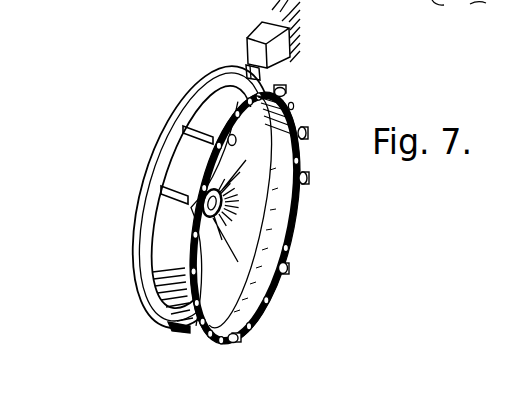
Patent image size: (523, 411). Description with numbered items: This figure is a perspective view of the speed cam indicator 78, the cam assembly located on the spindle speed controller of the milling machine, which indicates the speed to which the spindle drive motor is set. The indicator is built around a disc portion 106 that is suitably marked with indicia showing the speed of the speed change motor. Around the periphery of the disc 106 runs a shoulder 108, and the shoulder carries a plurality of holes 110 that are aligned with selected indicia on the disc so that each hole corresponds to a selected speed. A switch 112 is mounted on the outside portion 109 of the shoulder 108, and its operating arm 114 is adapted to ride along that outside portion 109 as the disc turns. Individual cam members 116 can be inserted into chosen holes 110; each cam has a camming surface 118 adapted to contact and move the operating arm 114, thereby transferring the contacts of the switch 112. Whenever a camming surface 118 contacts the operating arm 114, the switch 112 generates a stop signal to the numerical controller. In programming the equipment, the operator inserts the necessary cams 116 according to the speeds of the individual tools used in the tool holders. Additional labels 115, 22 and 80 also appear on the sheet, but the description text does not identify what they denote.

The speed cam indicator 78 is at (126, 166).
The disc portion 106 is at (150, 189).
The shoulder 108 is at (212, 345).
The outside portion 109 is at (213, 118).
The holes 110 is at (222, 257).
The switch 112 is at (251, 35).
The operating arm 114 is at (245, 68).
The cross-section wall 115 is at (172, 329).
The cam members 116 is at (289, 89).
The camming surfaces 118 is at (162, 184).
The housing 22 is at (487, 8).
The indicator 80 is at (443, 19).